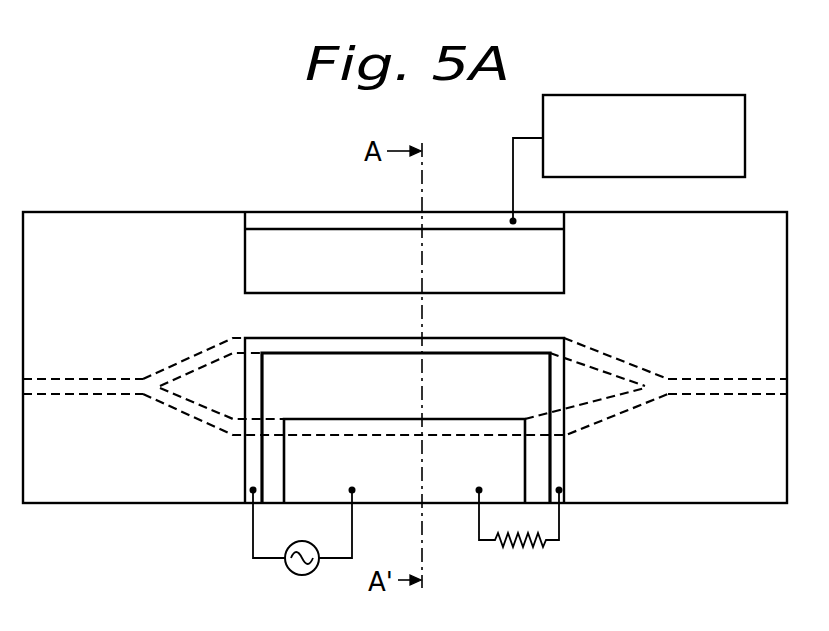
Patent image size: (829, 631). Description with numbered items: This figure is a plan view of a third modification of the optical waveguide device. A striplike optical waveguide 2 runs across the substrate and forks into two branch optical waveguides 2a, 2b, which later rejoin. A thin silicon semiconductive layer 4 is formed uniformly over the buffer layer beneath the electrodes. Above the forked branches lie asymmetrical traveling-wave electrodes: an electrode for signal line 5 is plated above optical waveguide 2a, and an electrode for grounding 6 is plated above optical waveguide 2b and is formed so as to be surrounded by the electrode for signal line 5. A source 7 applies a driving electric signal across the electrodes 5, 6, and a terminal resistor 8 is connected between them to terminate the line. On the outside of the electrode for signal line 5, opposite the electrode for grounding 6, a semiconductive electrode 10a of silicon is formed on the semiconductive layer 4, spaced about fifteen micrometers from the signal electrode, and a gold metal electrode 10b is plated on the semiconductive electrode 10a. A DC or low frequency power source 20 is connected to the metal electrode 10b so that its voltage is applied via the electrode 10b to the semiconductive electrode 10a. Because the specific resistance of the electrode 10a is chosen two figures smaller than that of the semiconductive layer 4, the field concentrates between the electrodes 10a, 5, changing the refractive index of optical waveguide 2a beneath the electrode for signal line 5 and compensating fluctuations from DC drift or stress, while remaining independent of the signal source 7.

The optical waveguide 2 is at (787, 386).
The forked optical waveguide 2a is at (185, 360).
The forked optical waveguide 2b is at (185, 360).
The semiconductive layer 4 is at (722, 487).
The electrode for signal line 5 is at (558, 468).
The electrode for grounding 6 is at (451, 488).
The source 7 is at (289, 572).
The terminal resistor 8 is at (520, 551).
The semiconductive electrode 10a is at (246, 257).
The metal electrode 10b is at (310, 220).
The power source 20 is at (543, 104).